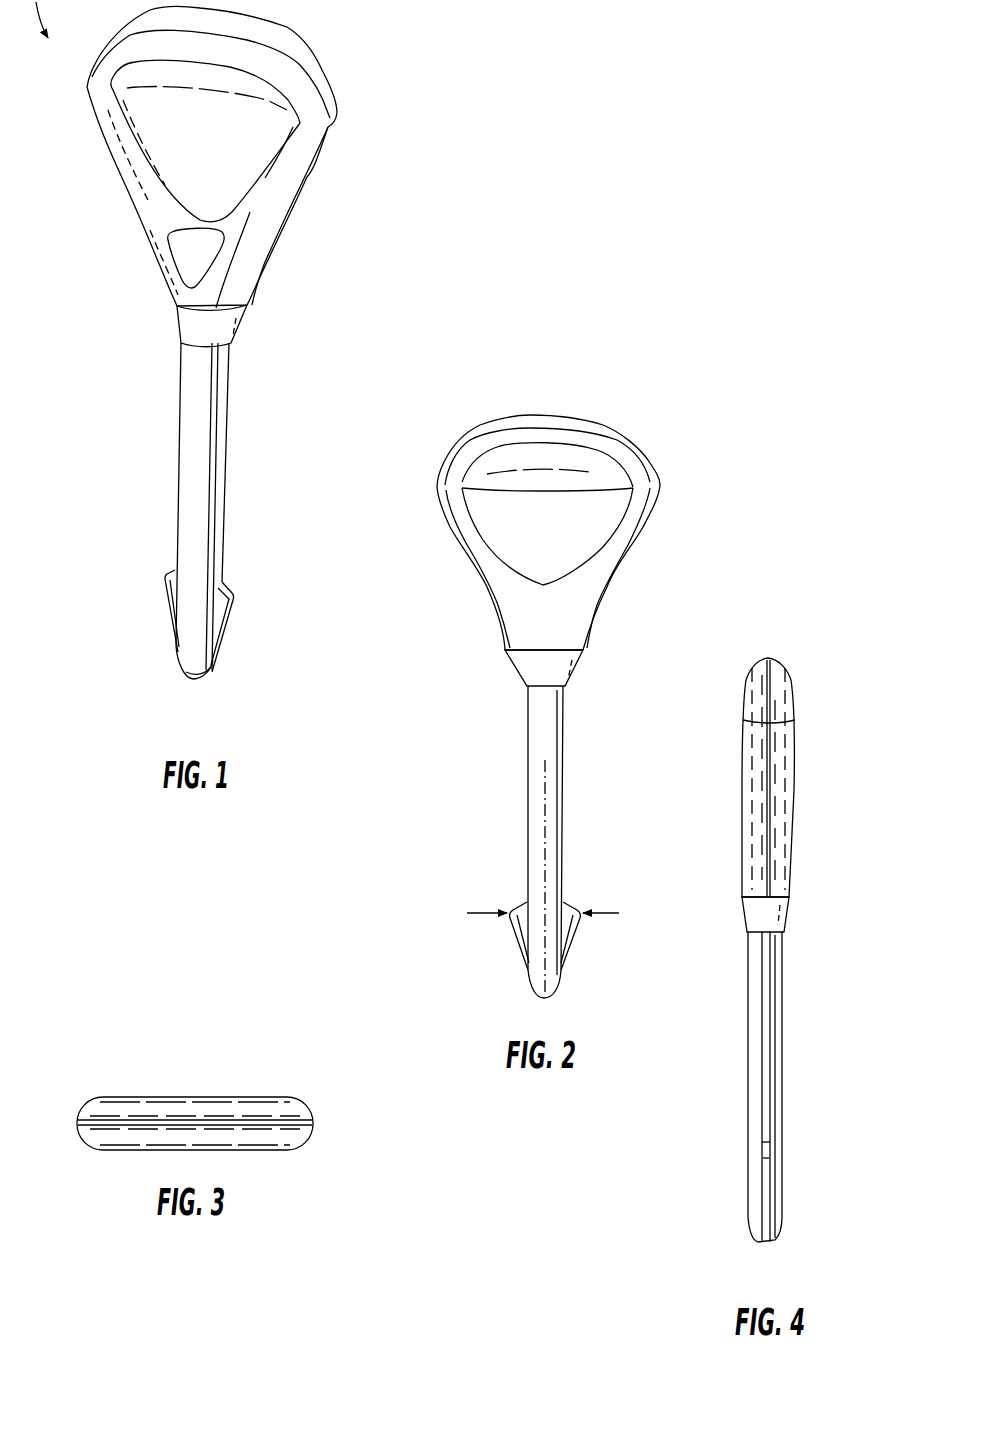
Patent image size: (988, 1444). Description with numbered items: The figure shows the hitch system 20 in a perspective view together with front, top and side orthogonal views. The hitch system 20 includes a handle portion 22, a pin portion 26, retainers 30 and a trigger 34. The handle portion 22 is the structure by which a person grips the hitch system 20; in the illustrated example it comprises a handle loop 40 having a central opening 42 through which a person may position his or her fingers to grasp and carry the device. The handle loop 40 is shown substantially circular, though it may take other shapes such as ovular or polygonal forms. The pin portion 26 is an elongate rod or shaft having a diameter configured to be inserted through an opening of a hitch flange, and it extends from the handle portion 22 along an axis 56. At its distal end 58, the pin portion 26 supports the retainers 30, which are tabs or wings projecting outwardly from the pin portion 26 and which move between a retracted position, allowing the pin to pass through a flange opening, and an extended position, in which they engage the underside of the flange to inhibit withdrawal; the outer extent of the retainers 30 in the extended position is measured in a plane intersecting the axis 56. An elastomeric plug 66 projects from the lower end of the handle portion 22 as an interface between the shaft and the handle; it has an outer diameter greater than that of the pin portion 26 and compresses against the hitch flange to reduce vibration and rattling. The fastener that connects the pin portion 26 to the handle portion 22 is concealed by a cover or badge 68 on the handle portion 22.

In FIG. 2, the hitch system 20 is at (536, 694).
In FIG. 3, the hitch system 20 is at (306, 1088).
In FIG. 4, the hitch system 20 is at (816, 933).
In FIG. 1, the handle portion 22 is at (300, 216).
In FIG. 2, the handle portion 22 is at (636, 548).
In FIG. 4, the handle portion 22 is at (795, 806).
In FIG. 1, the pin portion 26 is at (197, 523).
In FIG. 2, the pin portion 26 is at (543, 842).
In FIG. 4, the pin portion 26 is at (796, 1087).
In FIG. 1, the retainers 30 is at (163, 582).
In FIG. 2, the retainers 30 is at (520, 940).
In FIG. 4, the retainers 30 is at (766, 1183).
In FIG. 1, the trigger 34 is at (223, 452).
In FIG. 4, the trigger 34 is at (769, 1104).
In FIG. 1, the handle loop 40 is at (318, 148).
In FIG. 1, the central opening 42 is at (249, 163).
In FIG. 2, the central opening 42 is at (500, 535).
In FIG. 2, the axis 56 is at (544, 820).
In FIG. 1, the distal end 58 is at (217, 679).
In FIG. 1, the plug 66 is at (226, 338).
In FIG. 2, the plug 66 is at (586, 668).
In FIG. 4, the plug 66 is at (791, 918).
In FIG. 1, the cover or badge 68 is at (199, 258).